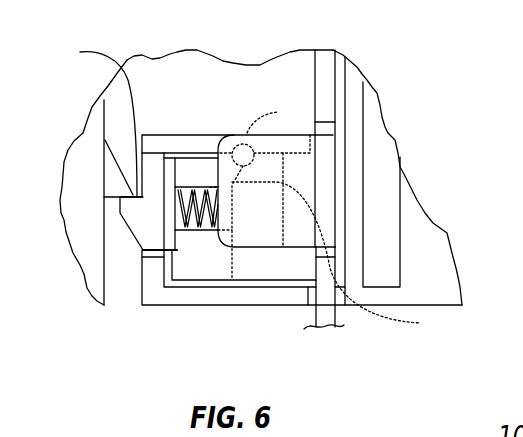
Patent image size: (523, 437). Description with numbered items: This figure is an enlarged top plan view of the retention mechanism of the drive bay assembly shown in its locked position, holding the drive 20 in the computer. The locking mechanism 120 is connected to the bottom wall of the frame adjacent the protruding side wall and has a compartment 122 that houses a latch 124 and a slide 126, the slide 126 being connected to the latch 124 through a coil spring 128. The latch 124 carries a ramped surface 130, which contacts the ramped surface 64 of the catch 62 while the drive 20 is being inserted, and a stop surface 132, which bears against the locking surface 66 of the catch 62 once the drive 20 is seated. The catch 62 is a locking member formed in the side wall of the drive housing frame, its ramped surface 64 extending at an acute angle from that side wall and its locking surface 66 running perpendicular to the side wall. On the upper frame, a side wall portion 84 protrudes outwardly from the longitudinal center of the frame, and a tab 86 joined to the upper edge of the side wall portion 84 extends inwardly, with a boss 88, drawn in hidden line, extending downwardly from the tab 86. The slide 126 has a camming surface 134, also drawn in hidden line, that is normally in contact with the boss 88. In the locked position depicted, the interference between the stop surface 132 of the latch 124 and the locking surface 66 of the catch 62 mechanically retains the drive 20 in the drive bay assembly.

The drive 20 is at (83, 131).
The catch 62 is at (110, 173).
The ramped surface 64 is at (104, 101).
The locking surface 66 is at (136, 219).
The side wall portion 84 is at (325, 63).
The tab 86 is at (322, 162).
The boss 88 is at (272, 188).
The locking mechanism 120 is at (190, 124).
The compartment 122 is at (213, 307).
The latch 124 is at (135, 200).
The slide 126 is at (255, 275).
The coil spring 128 is at (186, 218).
The ramped surface 130 is at (137, 215).
The stop surface 132 is at (86, 115).
The camming surface 134 is at (371, 261).